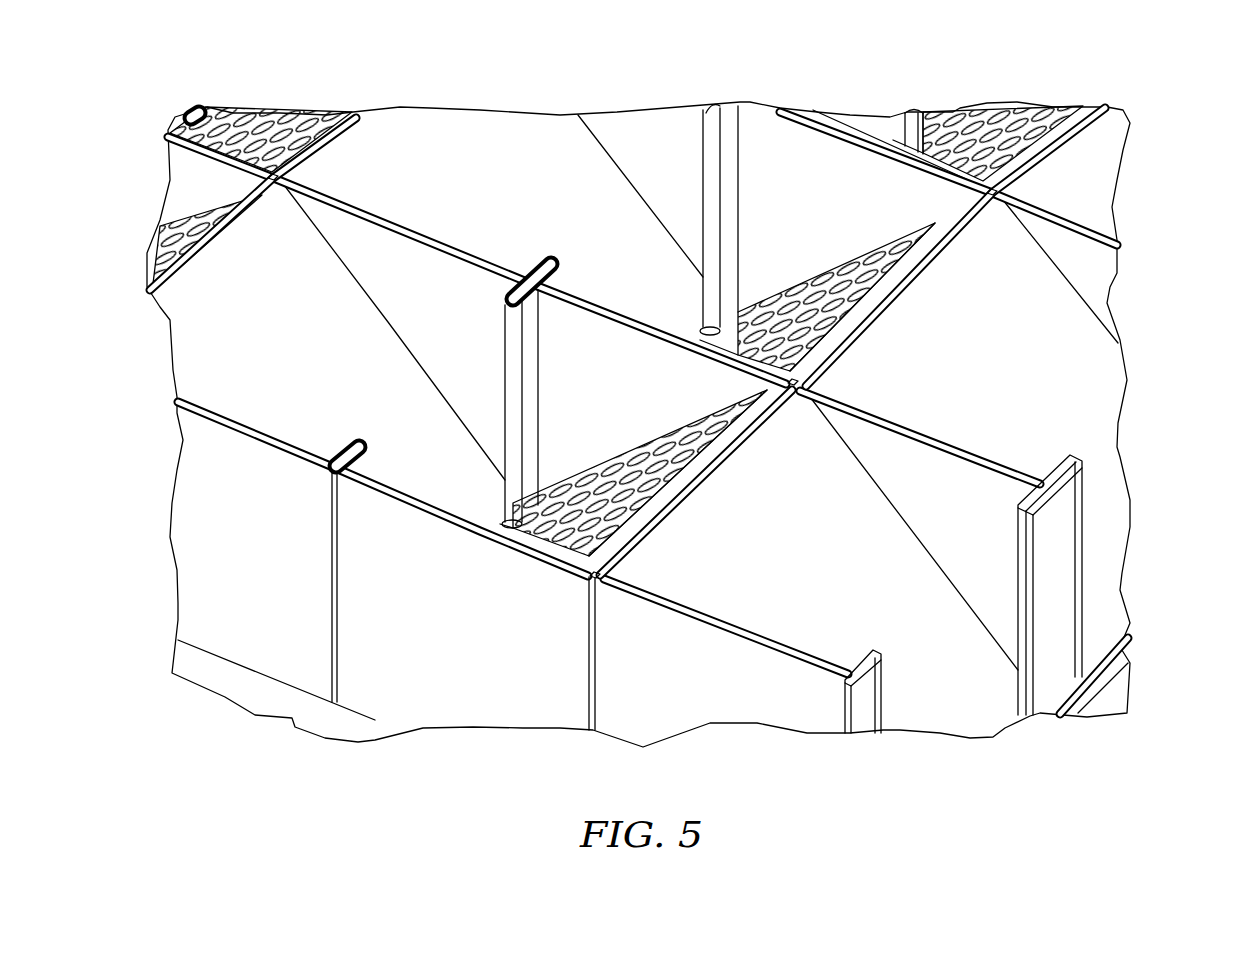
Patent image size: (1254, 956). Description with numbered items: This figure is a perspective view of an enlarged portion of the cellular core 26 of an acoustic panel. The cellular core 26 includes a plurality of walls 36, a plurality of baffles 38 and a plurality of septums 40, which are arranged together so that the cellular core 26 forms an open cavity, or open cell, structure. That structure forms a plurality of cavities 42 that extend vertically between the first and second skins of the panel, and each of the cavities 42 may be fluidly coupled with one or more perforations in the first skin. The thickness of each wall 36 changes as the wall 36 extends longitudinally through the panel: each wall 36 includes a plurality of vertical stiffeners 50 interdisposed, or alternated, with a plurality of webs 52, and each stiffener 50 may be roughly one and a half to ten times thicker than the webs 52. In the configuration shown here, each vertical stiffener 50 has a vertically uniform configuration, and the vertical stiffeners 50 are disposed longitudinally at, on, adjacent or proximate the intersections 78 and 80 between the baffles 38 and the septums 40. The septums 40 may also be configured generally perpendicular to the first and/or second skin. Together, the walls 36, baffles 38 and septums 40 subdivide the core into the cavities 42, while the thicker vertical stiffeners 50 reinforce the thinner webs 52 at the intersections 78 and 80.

The cellular core 26 is at (700, 406).
The wall 36 is at (1095, 226).
The baffle 38 is at (1092, 178).
The septum 40 is at (1000, 133).
The cavity 42 is at (655, 182).
The vertical stiffener 50 is at (544, 250).
The web 52 is at (427, 228).
The intersection 78 is at (903, 273).
The intersection 80 is at (706, 327).